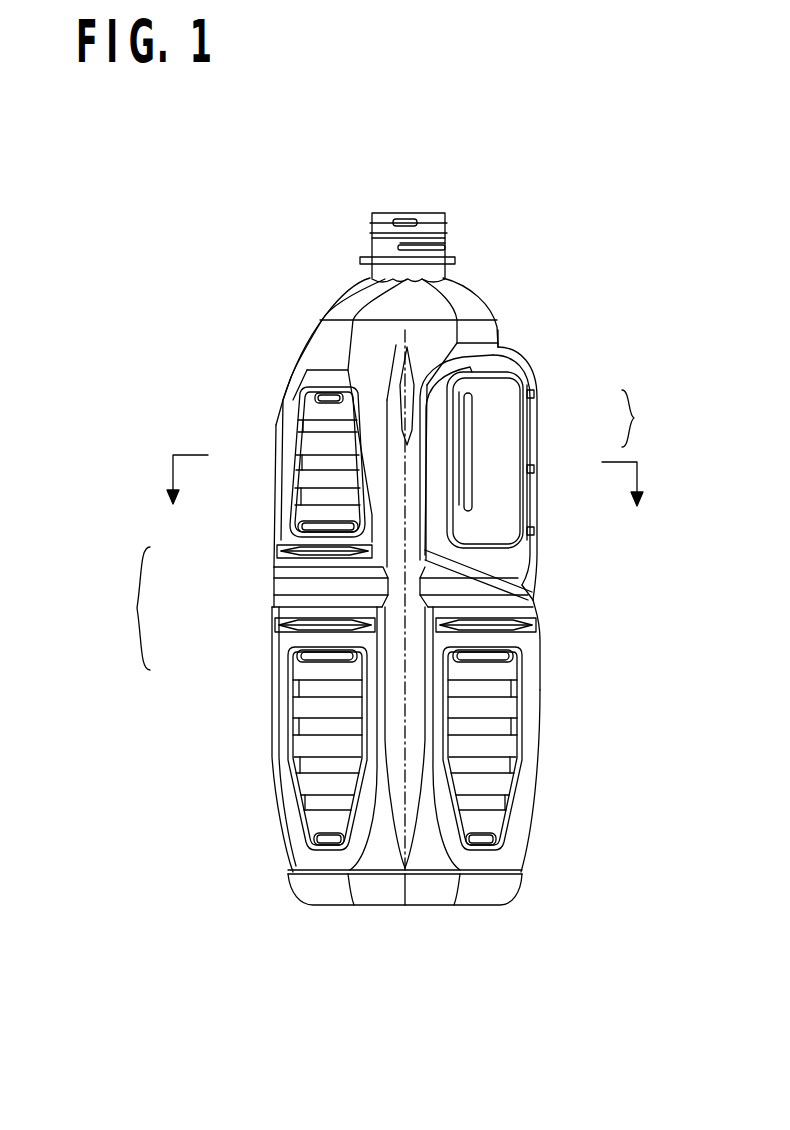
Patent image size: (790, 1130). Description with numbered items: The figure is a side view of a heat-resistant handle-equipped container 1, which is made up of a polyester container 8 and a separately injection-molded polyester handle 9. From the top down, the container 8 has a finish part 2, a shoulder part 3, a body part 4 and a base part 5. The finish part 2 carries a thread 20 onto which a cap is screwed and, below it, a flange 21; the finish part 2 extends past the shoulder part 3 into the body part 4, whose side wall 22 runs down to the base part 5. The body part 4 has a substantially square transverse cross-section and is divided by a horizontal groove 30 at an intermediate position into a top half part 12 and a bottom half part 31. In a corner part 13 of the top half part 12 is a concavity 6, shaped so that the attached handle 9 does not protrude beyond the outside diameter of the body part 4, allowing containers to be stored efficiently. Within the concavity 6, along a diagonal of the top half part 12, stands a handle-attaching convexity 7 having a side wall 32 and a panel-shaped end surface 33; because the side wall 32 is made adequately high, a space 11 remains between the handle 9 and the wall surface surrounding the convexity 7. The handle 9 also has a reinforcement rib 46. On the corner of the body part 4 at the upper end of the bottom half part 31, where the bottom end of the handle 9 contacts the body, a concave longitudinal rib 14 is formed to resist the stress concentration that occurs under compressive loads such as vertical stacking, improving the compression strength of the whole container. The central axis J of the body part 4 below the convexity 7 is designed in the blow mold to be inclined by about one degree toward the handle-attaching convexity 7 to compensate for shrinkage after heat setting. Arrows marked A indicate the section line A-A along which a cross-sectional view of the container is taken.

The handle-equipped container 1 is at (243, 252).
The finish part 2 is at (372, 247).
The thread 20 is at (441, 222).
The flange 21 is at (360, 261).
The shoulder part 3 is at (478, 305).
The body part 4 is at (129, 608).
The base part 5 is at (437, 893).
The concavity 6 is at (496, 497).
The handle-attaching convexity 7 is at (636, 418).
The polyester container 8 is at (266, 426).
The polyester handle 9 is at (540, 382).
The space 11 is at (522, 375).
The top half part 12 is at (270, 513).
The corner part 13 is at (415, 753).
The longitudinal rib 14 is at (538, 611).
The side wall 22 is at (282, 765).
The horizontal groove 30 is at (505, 585).
The bottom half part 31 is at (266, 690).
The side wall 32 is at (460, 437).
The panel-shaped end surface 33 is at (470, 455).
The reinforcement rib 46 is at (534, 394).
The line A- A is at (405, 480).
The central axis J is at (407, 643).